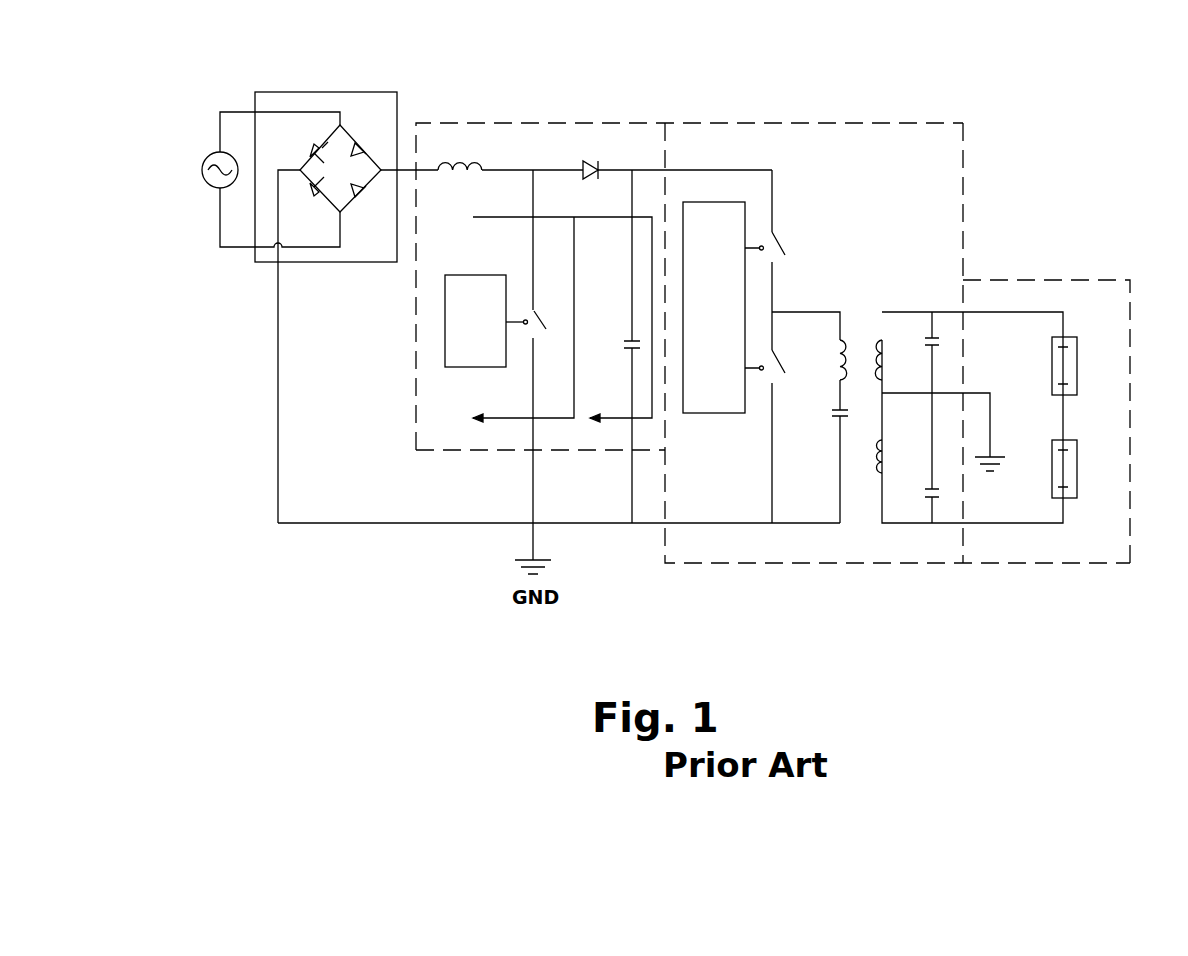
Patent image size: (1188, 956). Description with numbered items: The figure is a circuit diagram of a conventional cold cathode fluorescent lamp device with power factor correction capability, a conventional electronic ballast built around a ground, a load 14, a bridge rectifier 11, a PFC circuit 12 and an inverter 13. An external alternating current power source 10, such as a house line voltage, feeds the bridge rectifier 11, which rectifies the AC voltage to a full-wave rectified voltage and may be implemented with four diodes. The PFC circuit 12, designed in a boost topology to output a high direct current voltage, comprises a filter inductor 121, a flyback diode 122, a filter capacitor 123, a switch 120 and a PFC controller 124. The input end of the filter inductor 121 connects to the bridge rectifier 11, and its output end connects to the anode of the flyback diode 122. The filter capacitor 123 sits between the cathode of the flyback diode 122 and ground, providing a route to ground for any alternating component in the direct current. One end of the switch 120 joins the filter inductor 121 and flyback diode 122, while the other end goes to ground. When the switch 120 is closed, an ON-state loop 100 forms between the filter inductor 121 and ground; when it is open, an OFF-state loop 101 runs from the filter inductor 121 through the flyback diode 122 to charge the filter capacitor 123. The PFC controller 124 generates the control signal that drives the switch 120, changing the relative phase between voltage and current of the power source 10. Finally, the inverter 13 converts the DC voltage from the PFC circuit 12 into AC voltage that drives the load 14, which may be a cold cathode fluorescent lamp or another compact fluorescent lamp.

The AC power source 10 is at (208, 157).
The bridge rectifier 11 is at (365, 102).
The PFC circuit 12 is at (632, 136).
The inverter 13 is at (883, 140).
The load 14 is at (1103, 295).
The ON-state loop 100 is at (553, 418).
The OFF-state loop 101 is at (617, 415).
The switch 120 is at (542, 312).
The filter inductor 121 is at (477, 160).
The flyback diode 122 is at (592, 183).
The filter capacitor 123 is at (629, 340).
The PFC controller 124 is at (460, 360).